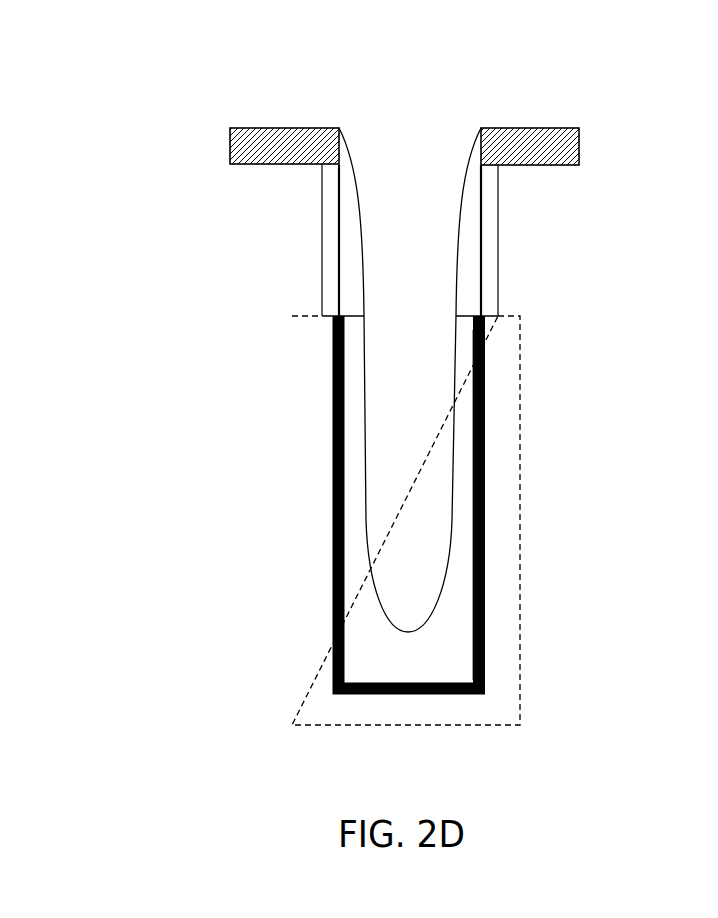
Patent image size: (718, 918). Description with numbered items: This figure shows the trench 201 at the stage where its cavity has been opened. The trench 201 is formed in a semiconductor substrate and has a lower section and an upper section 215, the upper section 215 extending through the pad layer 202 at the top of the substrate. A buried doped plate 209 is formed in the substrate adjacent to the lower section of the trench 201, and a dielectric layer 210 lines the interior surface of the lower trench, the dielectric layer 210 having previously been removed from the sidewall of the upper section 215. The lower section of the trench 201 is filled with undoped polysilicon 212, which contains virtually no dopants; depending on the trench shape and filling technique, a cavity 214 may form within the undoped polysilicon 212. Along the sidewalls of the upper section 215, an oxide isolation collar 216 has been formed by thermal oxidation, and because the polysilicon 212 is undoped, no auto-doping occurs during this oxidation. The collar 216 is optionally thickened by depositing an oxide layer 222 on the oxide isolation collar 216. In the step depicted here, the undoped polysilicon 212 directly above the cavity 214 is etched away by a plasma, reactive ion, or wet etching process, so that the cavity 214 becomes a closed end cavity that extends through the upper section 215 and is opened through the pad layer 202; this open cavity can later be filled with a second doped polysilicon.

The trench 201 is at (436, 86).
The pad layer 202 is at (280, 149).
The buried doped plate 209 is at (305, 510).
The dielectric layer 210 is at (487, 610).
The undoped polysilicon 212 is at (468, 428).
The cavity 214 is at (427, 473).
The upper section 215 is at (425, 252).
The oxide isolation collar 216 is at (327, 198).
The oxide layer 222 is at (347, 255).